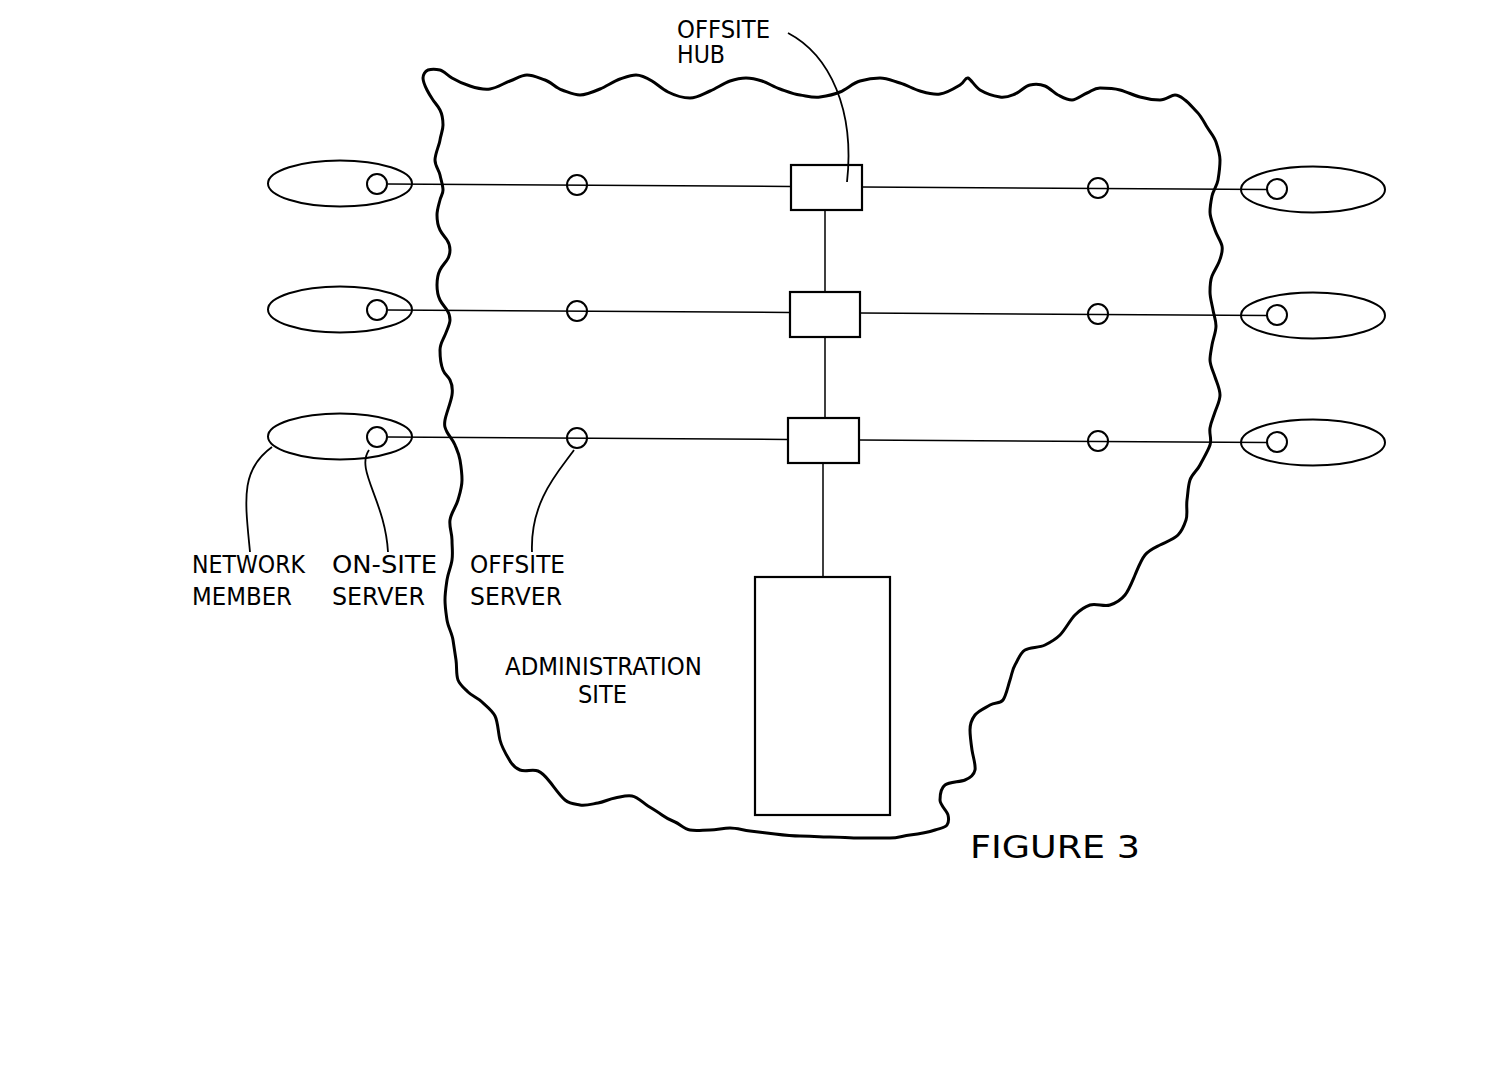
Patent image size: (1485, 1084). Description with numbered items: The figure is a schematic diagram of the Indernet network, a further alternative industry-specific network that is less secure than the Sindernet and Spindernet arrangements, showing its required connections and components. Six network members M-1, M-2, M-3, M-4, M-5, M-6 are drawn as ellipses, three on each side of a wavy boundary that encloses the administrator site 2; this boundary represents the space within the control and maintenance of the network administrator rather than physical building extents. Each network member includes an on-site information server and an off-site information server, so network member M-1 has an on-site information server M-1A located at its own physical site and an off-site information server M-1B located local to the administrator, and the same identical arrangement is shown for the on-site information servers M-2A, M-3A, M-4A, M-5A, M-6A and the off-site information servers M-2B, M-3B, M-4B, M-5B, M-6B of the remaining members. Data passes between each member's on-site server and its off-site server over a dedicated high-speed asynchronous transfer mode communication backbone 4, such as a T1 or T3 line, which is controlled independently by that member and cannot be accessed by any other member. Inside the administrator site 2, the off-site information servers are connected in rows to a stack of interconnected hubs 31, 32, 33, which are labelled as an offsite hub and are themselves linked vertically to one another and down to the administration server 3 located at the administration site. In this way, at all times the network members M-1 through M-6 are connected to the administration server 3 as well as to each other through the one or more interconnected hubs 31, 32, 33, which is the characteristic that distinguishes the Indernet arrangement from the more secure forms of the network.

The administrator site 2 is at (900, 64).
The administration server 3 is at (822, 696).
The high-speed communication backbone 4 is at (493, 182).
The hub 31 is at (826, 187).
The hub 32 is at (825, 314).
The hub 33 is at (823, 440).
The network member M-1 is at (266, 182).
The on-site information server M-1A is at (365, 181).
The off-site information server M-1B is at (565, 183).
The network member M-2 is at (266, 308).
The on-site information server M-2A is at (365, 307).
The off-site information server M-2B is at (565, 309).
The network member M-3 is at (266, 435).
The on-site information server M-3A is at (365, 434).
The off-site information server M-3B is at (565, 436).
The network member M-4 is at (1388, 190).
The on-site information server M-4A is at (1290, 188).
The off-site information server M-4B is at (1111, 188).
The network member M-5 is at (1388, 316).
The on-site information server M-5A is at (1290, 314).
The off-site information server M-5B is at (1150, 284).
The network member M-6 is at (1388, 443).
The on-site information server M-6A is at (1290, 441).
The off-site information server M-6B is at (1111, 441).